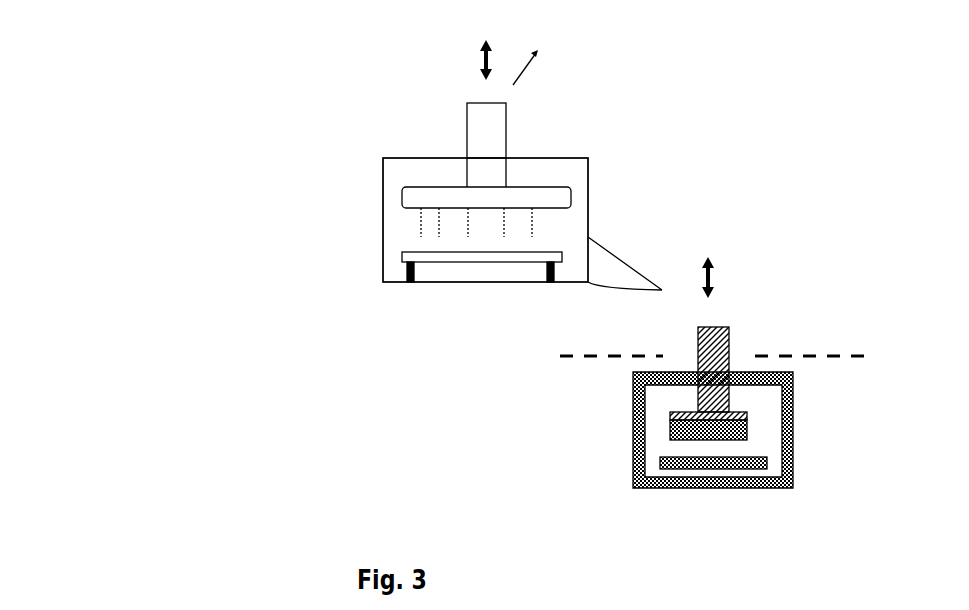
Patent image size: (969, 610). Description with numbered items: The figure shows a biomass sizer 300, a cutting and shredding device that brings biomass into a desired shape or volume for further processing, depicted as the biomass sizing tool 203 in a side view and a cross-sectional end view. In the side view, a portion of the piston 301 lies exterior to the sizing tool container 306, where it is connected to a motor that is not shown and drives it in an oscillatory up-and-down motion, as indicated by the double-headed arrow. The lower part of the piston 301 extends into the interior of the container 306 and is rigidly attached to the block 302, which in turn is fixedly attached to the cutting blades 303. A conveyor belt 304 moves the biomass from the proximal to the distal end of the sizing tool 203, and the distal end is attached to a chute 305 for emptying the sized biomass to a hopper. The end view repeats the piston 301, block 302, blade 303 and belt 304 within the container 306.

The biomass sizer 300 is at (63, 546).
The biomass sizing tool 203 is at (588, 148).
The piston 301 is at (513, 130).
The block 302 is at (578, 198).
The cutting blades 303 is at (412, 225).
The conveyor belt 304 is at (458, 272).
The chute 305 is at (625, 280).
The sizing tool container 306 is at (375, 215).